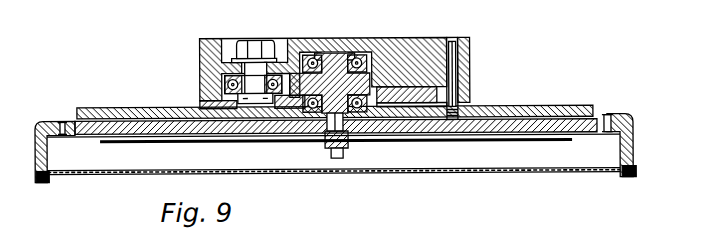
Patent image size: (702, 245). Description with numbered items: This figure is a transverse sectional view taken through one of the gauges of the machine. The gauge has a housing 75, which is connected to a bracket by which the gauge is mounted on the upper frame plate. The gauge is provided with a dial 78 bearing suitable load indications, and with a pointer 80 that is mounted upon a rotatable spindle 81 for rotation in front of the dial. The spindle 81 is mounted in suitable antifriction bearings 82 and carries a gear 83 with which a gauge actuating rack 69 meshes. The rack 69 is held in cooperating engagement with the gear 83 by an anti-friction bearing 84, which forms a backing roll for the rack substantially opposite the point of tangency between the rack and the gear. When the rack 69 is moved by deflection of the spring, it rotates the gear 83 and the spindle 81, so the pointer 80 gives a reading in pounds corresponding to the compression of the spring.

The gauge actuating rack 69 is at (292, 78).
The housing 75 is at (393, 38).
The dial 78 is at (522, 127).
The pointer 80 is at (482, 137).
The spindle 81 is at (312, 125).
The antifriction bearings 82 is at (368, 80).
The gear 83 is at (410, 83).
The anti-friction bearing 84 is at (200, 80).